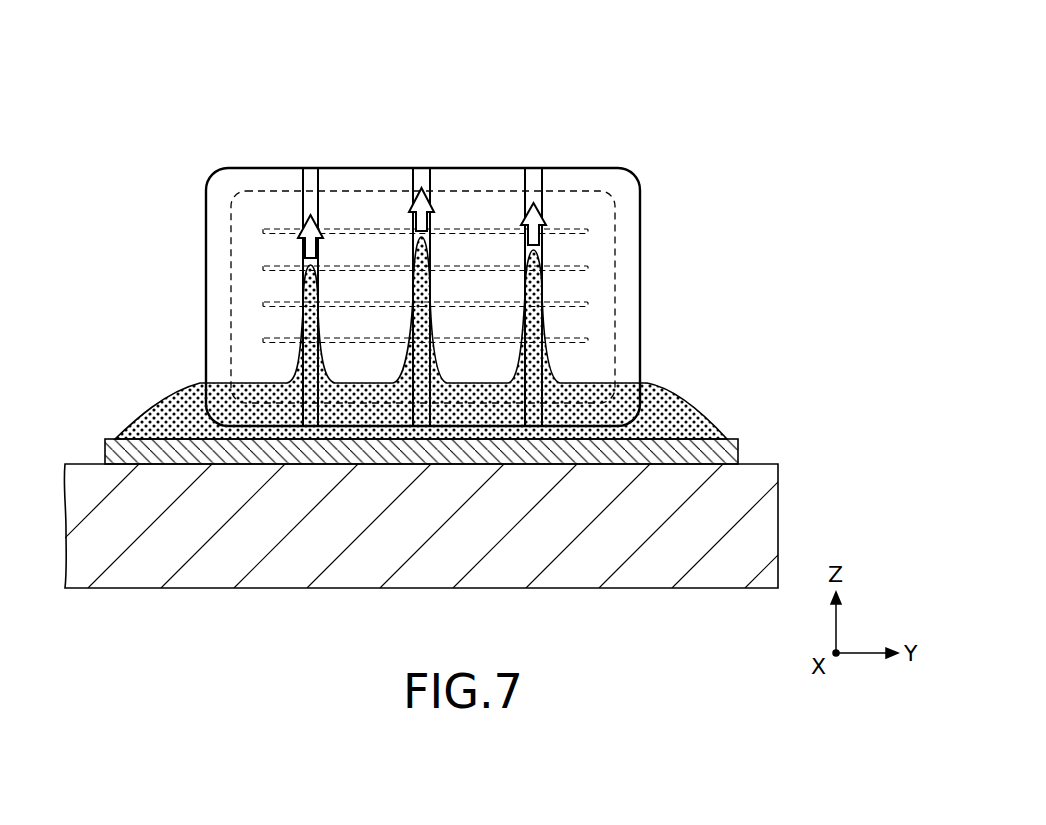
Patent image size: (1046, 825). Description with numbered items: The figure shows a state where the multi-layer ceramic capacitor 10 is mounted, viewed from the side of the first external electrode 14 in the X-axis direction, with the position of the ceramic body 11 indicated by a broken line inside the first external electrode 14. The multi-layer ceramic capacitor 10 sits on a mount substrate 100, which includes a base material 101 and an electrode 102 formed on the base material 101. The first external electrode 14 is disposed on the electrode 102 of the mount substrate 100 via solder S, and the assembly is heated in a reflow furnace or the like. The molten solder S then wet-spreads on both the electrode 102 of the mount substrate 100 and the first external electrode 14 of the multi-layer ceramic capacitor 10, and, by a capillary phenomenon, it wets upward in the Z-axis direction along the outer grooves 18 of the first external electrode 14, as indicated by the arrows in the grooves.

The multi-layer ceramic capacitor 10 is at (683, 148).
The ceramic body 11 is at (615, 278).
The first external electrode 14 is at (228, 185).
The outer grooves 18 is at (530, 178).
The solder S is at (668, 403).
The mount substrate 100 is at (870, 420).
The base material 101 is at (752, 497).
The electrode 102 is at (740, 447).